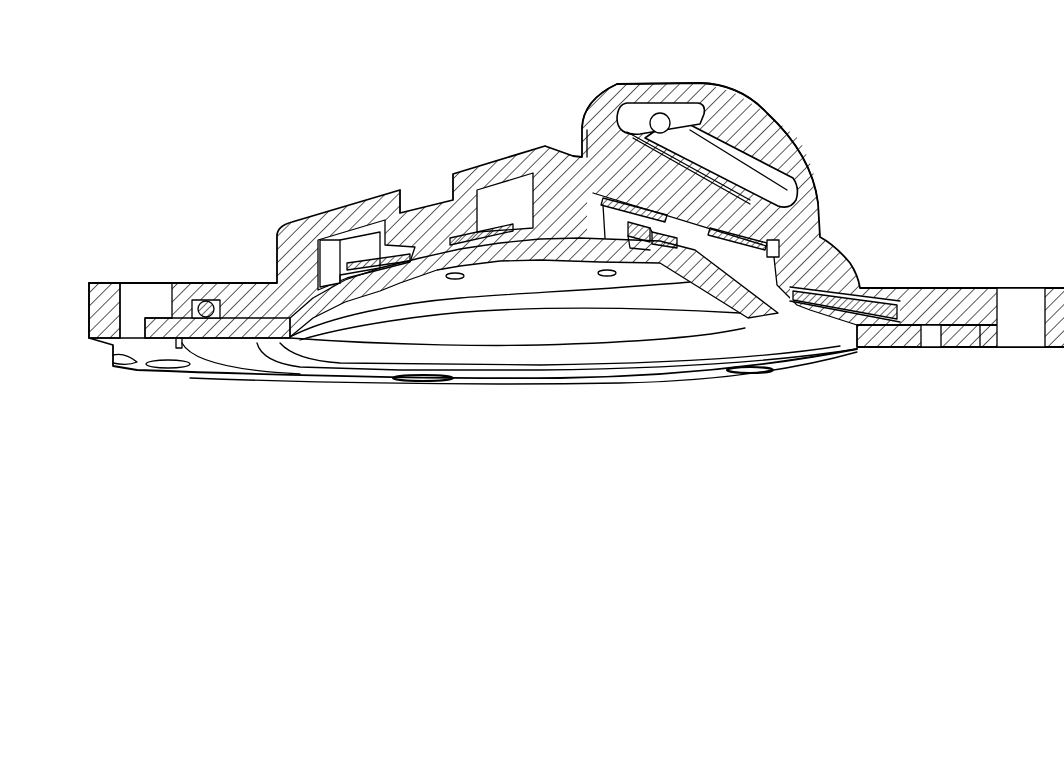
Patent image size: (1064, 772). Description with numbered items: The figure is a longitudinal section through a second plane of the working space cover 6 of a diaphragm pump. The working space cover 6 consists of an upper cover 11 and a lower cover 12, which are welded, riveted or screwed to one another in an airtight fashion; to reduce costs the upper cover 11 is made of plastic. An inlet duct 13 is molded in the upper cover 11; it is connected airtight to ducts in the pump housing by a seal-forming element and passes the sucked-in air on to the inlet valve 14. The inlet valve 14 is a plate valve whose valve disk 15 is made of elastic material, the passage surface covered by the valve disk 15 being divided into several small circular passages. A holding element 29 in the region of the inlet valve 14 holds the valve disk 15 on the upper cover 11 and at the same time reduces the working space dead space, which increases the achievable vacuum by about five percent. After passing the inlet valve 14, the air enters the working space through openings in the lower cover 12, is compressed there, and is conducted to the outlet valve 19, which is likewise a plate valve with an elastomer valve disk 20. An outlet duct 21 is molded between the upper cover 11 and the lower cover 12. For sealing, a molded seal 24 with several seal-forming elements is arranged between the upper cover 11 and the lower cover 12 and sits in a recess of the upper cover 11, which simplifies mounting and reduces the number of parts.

The working space cover 6 is at (270, 195).
The upper cover 11 is at (503, 158).
The lower cover 12 is at (255, 343).
The inlet duct 13 is at (733, 140).
The inlet valve 14 is at (772, 227).
The valve disk 15 is at (752, 248).
The outlet valve 19 is at (421, 292).
The valve disk 20 is at (508, 262).
The outlet duct 21 is at (347, 247).
The molded seal 24 is at (848, 320).
The holding element 29 is at (645, 252).